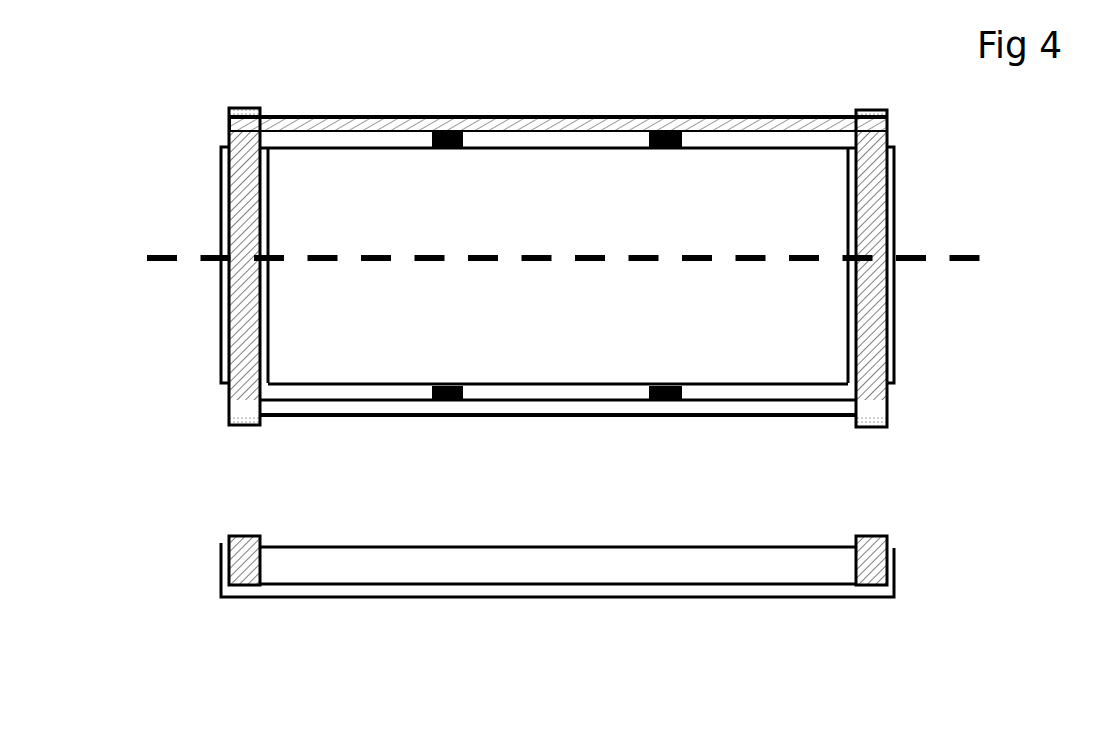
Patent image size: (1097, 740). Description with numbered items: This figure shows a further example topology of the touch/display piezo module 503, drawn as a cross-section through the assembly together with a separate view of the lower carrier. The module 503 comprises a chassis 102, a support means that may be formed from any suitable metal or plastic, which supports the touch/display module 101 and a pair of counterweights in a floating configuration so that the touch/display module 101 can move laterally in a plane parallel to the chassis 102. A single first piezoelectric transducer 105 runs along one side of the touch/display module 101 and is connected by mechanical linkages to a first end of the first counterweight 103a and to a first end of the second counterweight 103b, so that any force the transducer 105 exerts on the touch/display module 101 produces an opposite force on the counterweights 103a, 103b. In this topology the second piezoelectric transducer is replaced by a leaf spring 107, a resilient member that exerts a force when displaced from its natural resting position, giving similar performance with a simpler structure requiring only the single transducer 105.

The touch/display module 101 is at (388, 210).
The chassis 102 is at (220, 368).
The first counterweight 103a is at (250, 335).
The second counterweight 103b is at (877, 370).
The first piezoelectric transducer 105 is at (490, 118).
The leaf spring 107 is at (622, 417).
The touch/display piezo module 503 is at (564, 363).